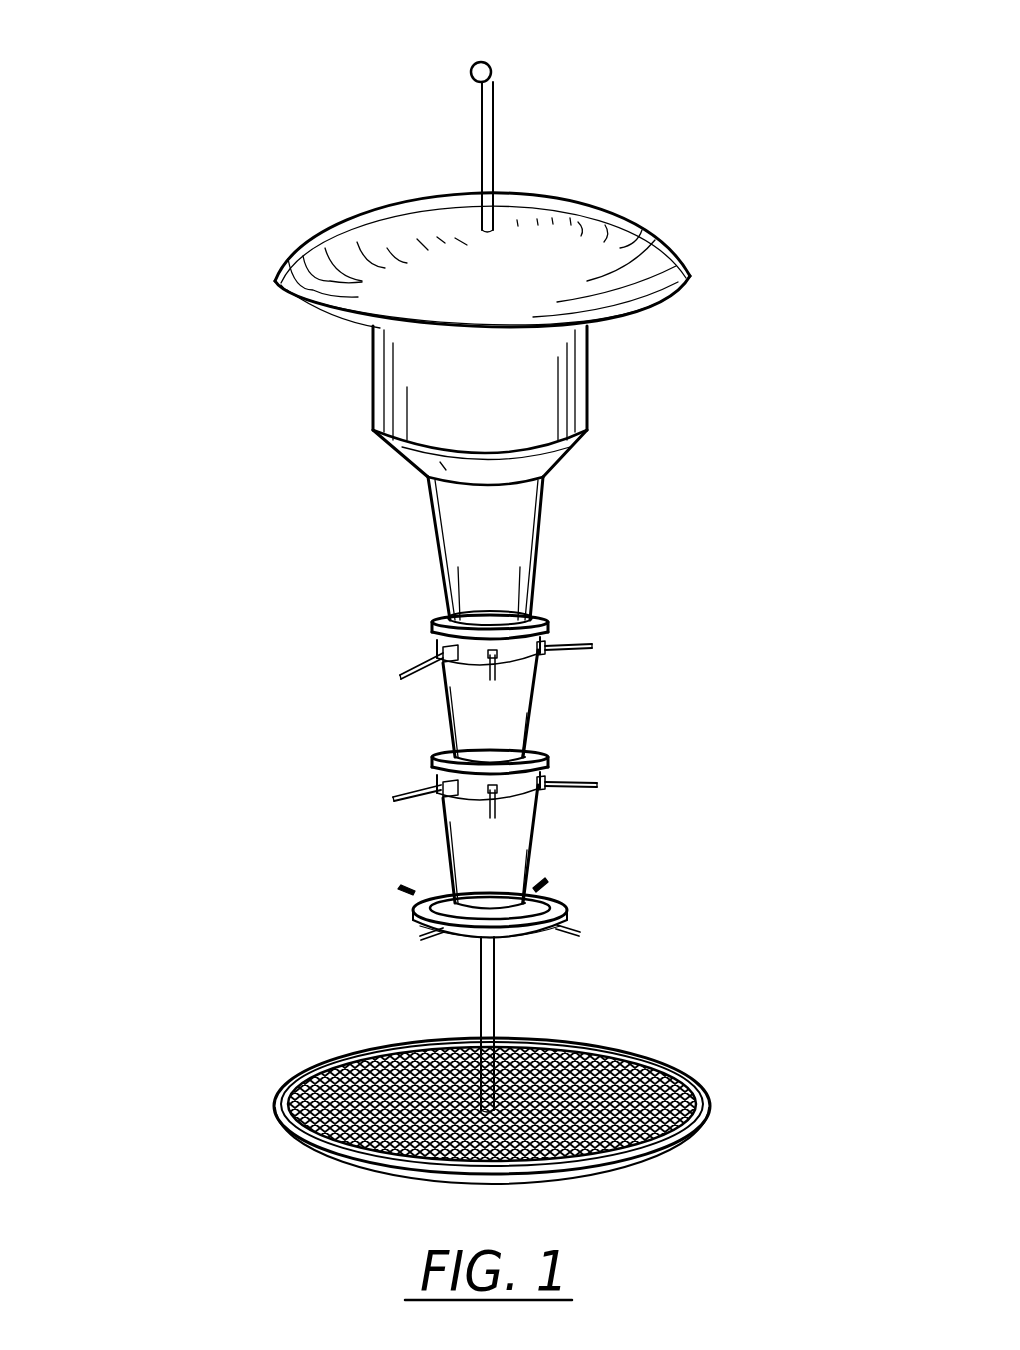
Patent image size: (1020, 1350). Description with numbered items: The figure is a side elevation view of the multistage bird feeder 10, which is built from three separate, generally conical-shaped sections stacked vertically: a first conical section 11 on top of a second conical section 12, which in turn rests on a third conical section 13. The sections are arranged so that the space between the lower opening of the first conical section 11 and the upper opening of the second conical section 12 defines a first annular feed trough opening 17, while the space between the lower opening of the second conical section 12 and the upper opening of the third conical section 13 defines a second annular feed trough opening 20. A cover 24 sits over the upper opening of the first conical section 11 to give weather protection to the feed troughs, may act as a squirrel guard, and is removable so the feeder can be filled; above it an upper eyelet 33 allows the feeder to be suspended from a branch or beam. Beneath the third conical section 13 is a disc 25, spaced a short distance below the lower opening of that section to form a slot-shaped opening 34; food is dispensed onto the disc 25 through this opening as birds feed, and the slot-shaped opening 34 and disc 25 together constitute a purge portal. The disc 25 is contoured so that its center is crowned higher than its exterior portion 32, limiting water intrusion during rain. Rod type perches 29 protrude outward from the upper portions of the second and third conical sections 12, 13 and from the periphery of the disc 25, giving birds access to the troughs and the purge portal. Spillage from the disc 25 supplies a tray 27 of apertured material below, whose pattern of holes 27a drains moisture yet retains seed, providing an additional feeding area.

The bird feeder 10 is at (225, 260).
The upper eyelet 33 is at (493, 66).
The cover 24 is at (578, 222).
The first conical section 11 is at (528, 514).
The first annular feed trough opening 17 is at (432, 617).
The second conical section 12 is at (528, 718).
The second annular feed trough opening 20 is at (438, 753).
The third conical section 13 is at (540, 838).
The exterior portion 32 is at (555, 893).
The disc 25 is at (528, 938).
The slot-shaped opening 34 is at (436, 890).
The perches 29 is at (592, 646).
The tray 27 is at (712, 1100).
The holes 27a is at (640, 1072).